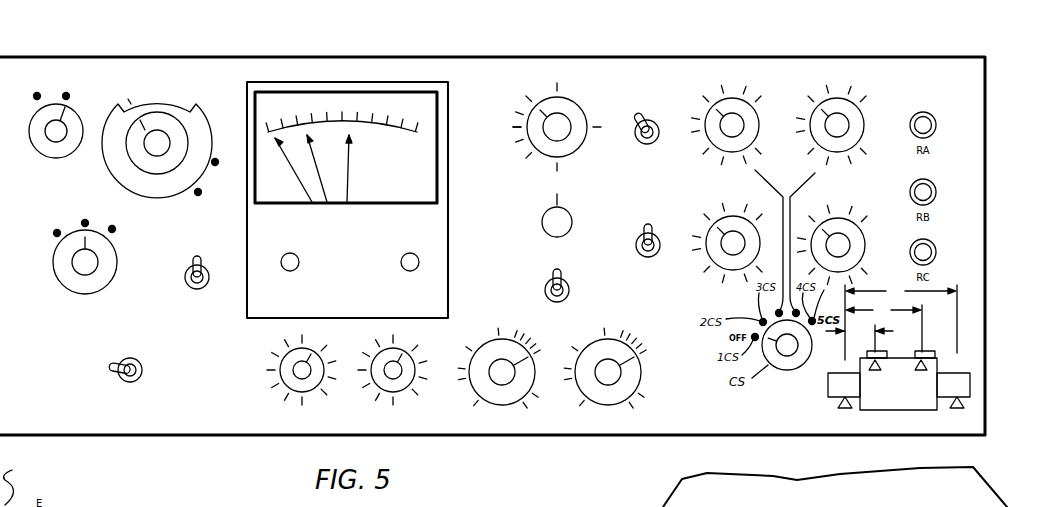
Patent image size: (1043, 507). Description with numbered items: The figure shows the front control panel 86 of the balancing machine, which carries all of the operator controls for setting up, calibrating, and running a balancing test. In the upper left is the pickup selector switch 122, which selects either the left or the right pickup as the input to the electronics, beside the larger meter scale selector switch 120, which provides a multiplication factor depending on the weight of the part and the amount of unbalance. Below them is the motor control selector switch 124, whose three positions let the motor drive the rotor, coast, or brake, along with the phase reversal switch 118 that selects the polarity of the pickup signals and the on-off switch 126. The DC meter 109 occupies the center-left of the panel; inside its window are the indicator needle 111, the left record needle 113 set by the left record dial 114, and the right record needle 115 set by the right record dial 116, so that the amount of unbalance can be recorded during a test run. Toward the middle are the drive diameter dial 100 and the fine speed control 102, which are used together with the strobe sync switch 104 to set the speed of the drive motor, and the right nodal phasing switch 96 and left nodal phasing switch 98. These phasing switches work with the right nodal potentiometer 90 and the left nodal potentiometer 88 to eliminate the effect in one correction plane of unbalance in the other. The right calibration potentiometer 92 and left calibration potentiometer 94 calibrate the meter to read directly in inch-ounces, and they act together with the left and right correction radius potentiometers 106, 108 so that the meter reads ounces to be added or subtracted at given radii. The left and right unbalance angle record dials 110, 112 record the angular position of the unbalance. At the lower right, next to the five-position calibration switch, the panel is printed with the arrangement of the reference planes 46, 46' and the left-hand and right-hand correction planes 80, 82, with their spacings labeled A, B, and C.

The front control panel 86 is at (975, 98).
The pickup selector switch 122 is at (44, 156).
The meter scale selector switch 120 is at (153, 185).
The motor control selector switch 124 is at (58, 280).
The phase reversal switch 118 is at (188, 287).
The on-off switch 126 is at (130, 382).
The DC meter 109 is at (374, 200).
The left record needle 113 is at (283, 160).
The indicator needle 111 is at (342, 148).
The right record needle 115 is at (350, 150).
The left record dial 114 is at (299, 259).
The right record dial 116 is at (401, 262).
The drive diameter dial 100 is at (565, 157).
The right nodal phasing switch 96 is at (640, 122).
The fine speed control 102 is at (568, 232).
The left nodal phasing switch 98 is at (660, 216).
The strobe sync switch 104 is at (546, 290).
The right nodal potentiometer 90 is at (722, 150).
The right calibration potentiometer 92 is at (846, 150).
The left nodal potentiometer 88 is at (708, 252).
The left calibration potentiometer 94 is at (852, 226).
The left unbalance angle record dial 110 is at (306, 398).
The right unbalance angle record dial 112 is at (397, 398).
The left correction radius potentiometer 106 is at (505, 413).
The right correction radius potentiometer 108 is at (611, 413).
The right-hand correction plane 82 is at (922, 332).
The left-hand correction plane 80 is at (878, 338).
The reference plane 46 is at (822, 384).
The reference plane 46' is at (980, 389).